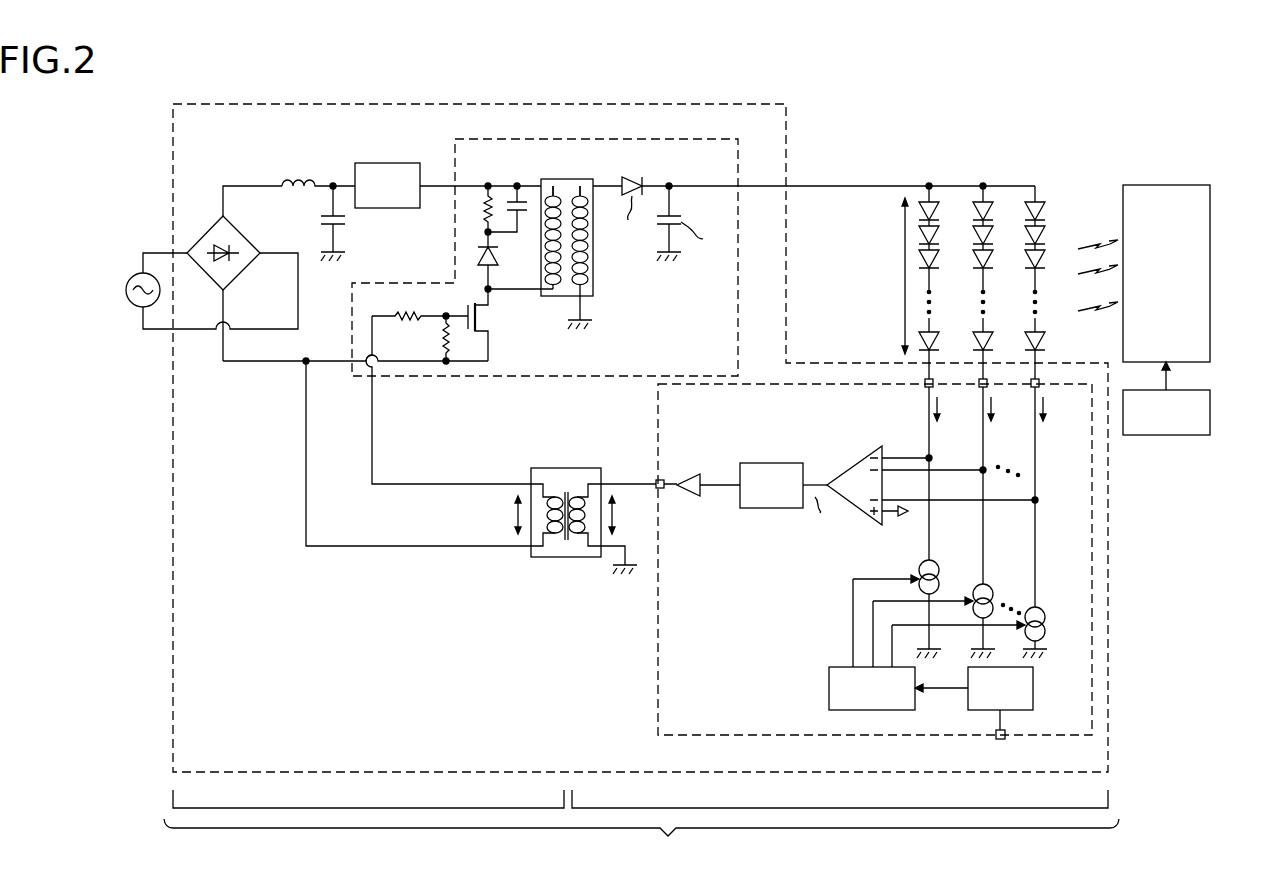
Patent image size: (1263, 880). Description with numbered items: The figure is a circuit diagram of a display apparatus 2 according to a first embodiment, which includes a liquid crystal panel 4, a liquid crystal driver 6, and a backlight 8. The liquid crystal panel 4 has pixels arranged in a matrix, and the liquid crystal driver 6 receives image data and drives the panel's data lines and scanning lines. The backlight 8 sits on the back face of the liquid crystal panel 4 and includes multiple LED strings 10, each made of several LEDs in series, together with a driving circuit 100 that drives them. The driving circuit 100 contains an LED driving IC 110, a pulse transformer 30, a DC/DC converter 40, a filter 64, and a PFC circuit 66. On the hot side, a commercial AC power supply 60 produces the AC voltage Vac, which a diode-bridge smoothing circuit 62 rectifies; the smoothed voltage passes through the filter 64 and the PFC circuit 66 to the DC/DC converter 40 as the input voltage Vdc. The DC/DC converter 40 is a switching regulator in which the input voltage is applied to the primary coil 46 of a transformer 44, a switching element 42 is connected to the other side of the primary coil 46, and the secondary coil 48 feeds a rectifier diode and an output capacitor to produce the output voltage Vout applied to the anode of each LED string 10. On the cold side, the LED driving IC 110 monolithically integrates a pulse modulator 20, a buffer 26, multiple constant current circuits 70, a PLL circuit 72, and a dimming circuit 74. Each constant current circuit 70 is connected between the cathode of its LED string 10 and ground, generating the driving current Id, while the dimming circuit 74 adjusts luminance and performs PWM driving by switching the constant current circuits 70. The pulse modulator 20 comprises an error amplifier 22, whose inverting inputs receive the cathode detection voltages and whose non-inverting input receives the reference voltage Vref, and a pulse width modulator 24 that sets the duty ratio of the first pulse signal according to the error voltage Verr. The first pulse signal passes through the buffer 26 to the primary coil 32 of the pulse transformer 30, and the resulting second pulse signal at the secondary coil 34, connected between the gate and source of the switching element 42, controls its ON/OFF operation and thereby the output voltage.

The display apparatus 2 is at (742, 869).
The liquid crystal panel 4 is at (1160, 185).
The liquid crystal driver 6 is at (1210, 408).
The backlight 8 is at (641, 823).
The LED string 10 is at (935, 305).
The pulse modulator 20 is at (880, 422).
The error amplifier 22 is at (862, 455).
The pulse width modulator 24 is at (775, 463).
The buffer 26 is at (690, 474).
The pulse transformer 30 is at (581, 515).
The primary coil 32 is at (580, 540).
The secondary coil 34 is at (553, 540).
The DC/DC converter 40 is at (604, 133).
The switching element 42 is at (490, 327).
The transformer 44 is at (593, 271).
The primary coil 46 is at (553, 181).
The secondary coil 48 is at (580, 181).
The commercial AC power supply 60 is at (128, 302).
The smoothing circuit 62 is at (220, 220).
The filter 64 is at (347, 171).
The PFC circuit 66 is at (385, 163).
The constant current circuit 70 is at (936, 561).
The PLL circuit 72 is at (1033, 686).
The dimming circuit 74 is at (826, 688).
The driving circuit 100 is at (1110, 688).
The LED driving IC 110 is at (658, 700).